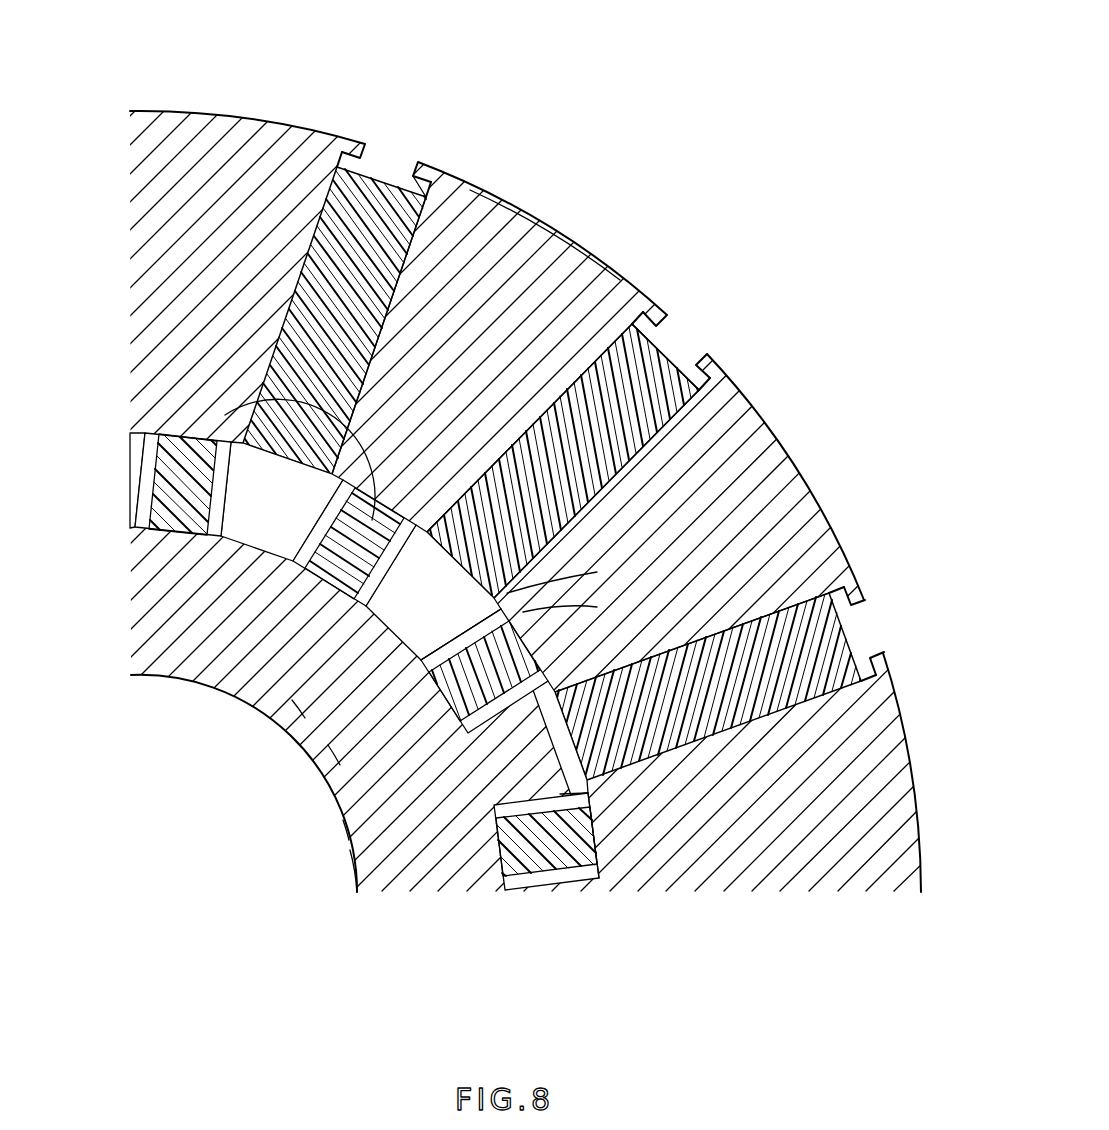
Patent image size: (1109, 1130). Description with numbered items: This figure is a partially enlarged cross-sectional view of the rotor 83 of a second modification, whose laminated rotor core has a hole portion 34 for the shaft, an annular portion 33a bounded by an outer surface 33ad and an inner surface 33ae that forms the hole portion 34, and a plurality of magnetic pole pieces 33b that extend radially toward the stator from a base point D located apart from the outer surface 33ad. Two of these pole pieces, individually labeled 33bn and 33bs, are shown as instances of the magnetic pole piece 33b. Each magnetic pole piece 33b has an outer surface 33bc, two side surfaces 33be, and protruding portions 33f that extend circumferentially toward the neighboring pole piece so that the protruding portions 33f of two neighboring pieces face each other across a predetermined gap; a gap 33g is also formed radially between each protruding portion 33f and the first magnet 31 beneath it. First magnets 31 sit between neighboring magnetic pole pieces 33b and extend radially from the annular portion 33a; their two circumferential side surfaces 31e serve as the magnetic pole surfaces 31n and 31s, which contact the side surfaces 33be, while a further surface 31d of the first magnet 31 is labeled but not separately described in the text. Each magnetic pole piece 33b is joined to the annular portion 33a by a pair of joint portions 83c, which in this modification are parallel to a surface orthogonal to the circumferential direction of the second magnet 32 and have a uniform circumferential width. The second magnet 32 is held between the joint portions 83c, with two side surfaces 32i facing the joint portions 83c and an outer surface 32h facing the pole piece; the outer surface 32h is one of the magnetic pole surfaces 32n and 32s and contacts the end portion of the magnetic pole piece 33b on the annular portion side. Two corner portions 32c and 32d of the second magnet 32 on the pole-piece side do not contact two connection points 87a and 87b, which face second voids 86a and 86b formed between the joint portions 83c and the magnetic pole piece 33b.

The rotor 83 is at (513, 501).
The joint portion 83c is at (222, 497).
The annular portion 33a is at (425, 875).
The inner surface 33ae is at (357, 868).
The outer surface 33ad is at (235, 537).
The magnetic pole piece 33b is at (218, 135).
The N-side tooth 33bn is at (597, 262).
The S-side tooth 33bs is at (773, 483).
The outer surface 33bc is at (556, 236).
The side surface 33be is at (410, 240).
The protruding portion 33f is at (362, 148).
The gap 33g is at (360, 165).
The first magnet 31 is at (322, 200).
The magnetic pole surface 31n is at (422, 240).
The magnetic pole surface 31s is at (662, 440).
The side surface 31e is at (618, 318).
The side face of first magnet 31d is at (662, 355).
The second magnet 32 is at (318, 720).
The outer surface 32h is at (225, 428).
The magnetic pole surface 32n is at (130, 472).
The magnetic pole surface 32s is at (646, 868).
The side surface 32i is at (455, 632).
The corner portion 32c is at (575, 606).
The corner portion 32d is at (612, 872).
The hole portion 34 is at (345, 828).
The second void 86a is at (298, 712).
The second void 86b is at (335, 757).
The connection point 87a is at (595, 574).
The connection point 87b is at (578, 880).
The base point D is at (398, 485).